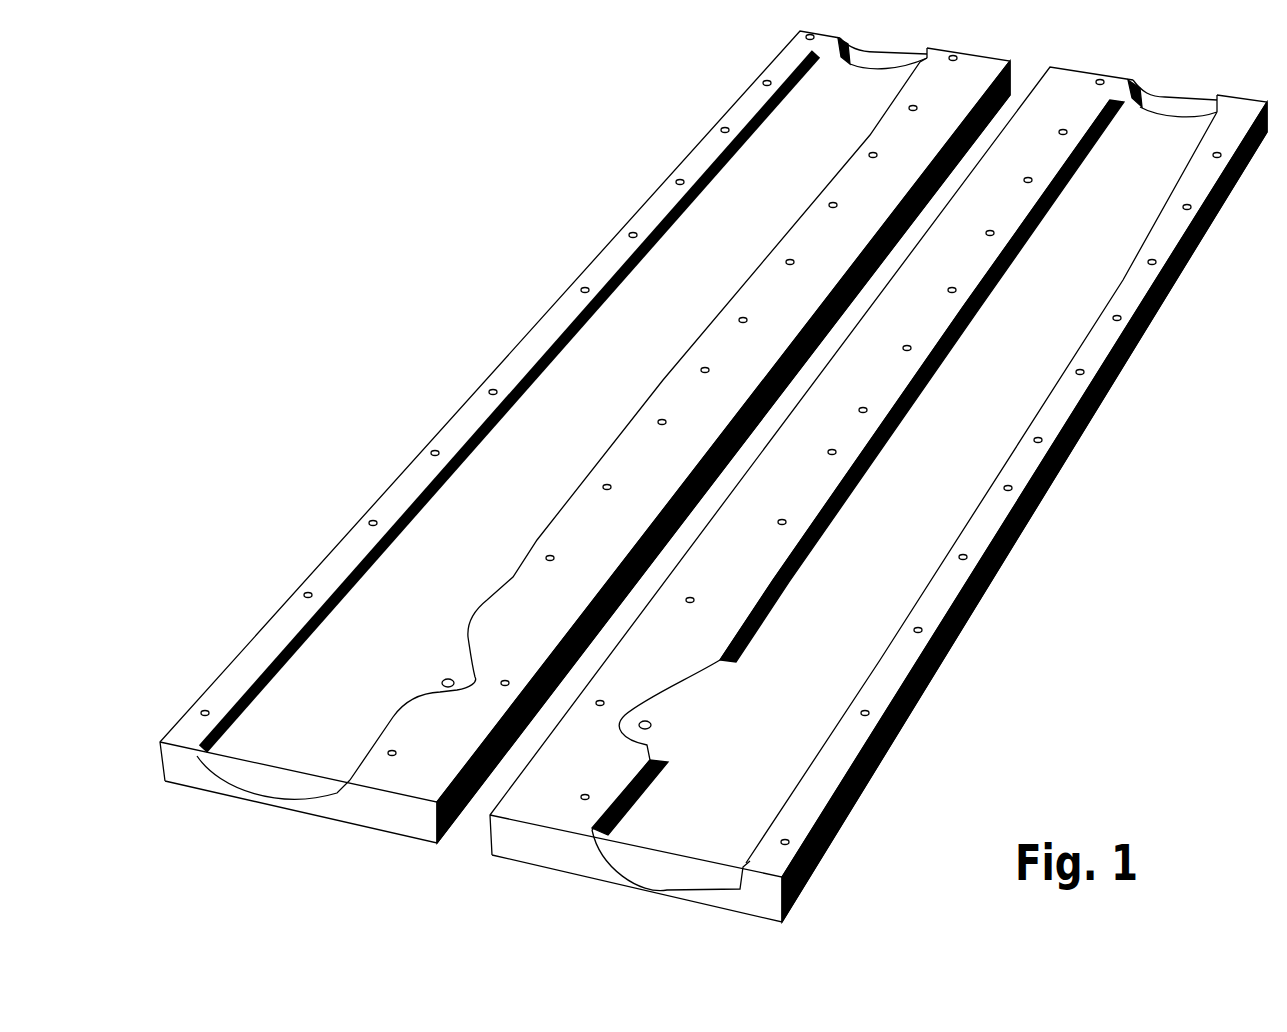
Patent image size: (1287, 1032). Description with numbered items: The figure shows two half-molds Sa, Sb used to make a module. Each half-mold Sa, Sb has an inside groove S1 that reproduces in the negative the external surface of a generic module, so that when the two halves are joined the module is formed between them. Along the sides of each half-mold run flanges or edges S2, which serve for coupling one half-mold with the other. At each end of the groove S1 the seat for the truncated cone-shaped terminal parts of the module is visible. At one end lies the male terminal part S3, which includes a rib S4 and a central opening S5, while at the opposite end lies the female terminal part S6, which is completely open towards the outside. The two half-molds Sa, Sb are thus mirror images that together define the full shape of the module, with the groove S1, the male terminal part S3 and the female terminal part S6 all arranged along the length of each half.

The half-mold Sa is at (585, 437).
The half-mold Sb is at (878, 494).
The inside groove S1 is at (783, 460).
The flanges or edges S2 is at (711, 440).
The male terminal part S3 is at (893, 77).
The rib S4 is at (983, 79).
The central opening S5 is at (922, 54).
The female terminal part S6 is at (473, 813).